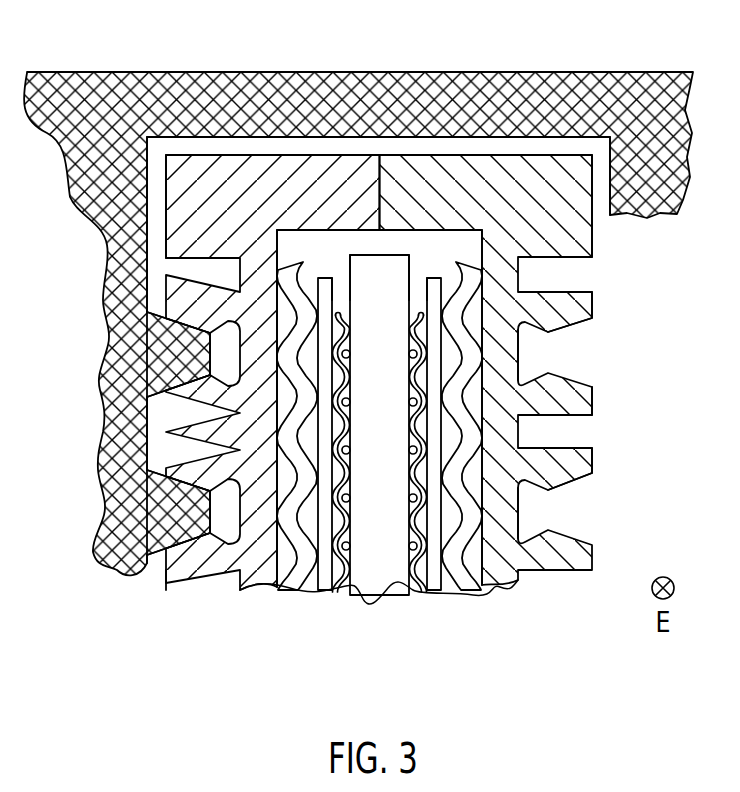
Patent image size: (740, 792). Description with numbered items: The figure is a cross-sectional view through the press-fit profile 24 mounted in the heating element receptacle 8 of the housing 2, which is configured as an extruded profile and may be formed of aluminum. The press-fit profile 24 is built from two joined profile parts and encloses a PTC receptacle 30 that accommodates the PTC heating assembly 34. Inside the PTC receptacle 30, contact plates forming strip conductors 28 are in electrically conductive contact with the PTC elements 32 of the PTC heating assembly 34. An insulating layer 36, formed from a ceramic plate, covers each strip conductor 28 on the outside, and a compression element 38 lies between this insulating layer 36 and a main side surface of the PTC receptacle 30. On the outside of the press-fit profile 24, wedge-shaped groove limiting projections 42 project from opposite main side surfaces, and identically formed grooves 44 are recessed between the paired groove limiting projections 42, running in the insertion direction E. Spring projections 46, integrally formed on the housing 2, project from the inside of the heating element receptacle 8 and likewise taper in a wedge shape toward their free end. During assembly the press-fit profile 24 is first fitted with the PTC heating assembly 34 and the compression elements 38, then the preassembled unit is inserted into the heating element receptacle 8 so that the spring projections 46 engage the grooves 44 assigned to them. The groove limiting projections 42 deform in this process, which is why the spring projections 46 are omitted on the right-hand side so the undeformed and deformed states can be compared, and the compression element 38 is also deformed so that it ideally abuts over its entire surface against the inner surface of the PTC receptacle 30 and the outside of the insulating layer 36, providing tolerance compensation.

The housing 2 is at (129, 112).
The heating element receptacle 8 is at (241, 136).
The press-fit profile 24 is at (574, 165).
The strip conductors 28 is at (334, 605).
The PTC receptacle 30 is at (362, 241).
The PTC elements 32 is at (381, 587).
The PTC heating assembly 34 is at (421, 262).
The insulating layer 36 is at (325, 587).
The compression element 38 is at (290, 603).
The groove limiting projections 42 is at (583, 305).
The grooves 44 is at (586, 360).
The spring projections 46 is at (157, 351).